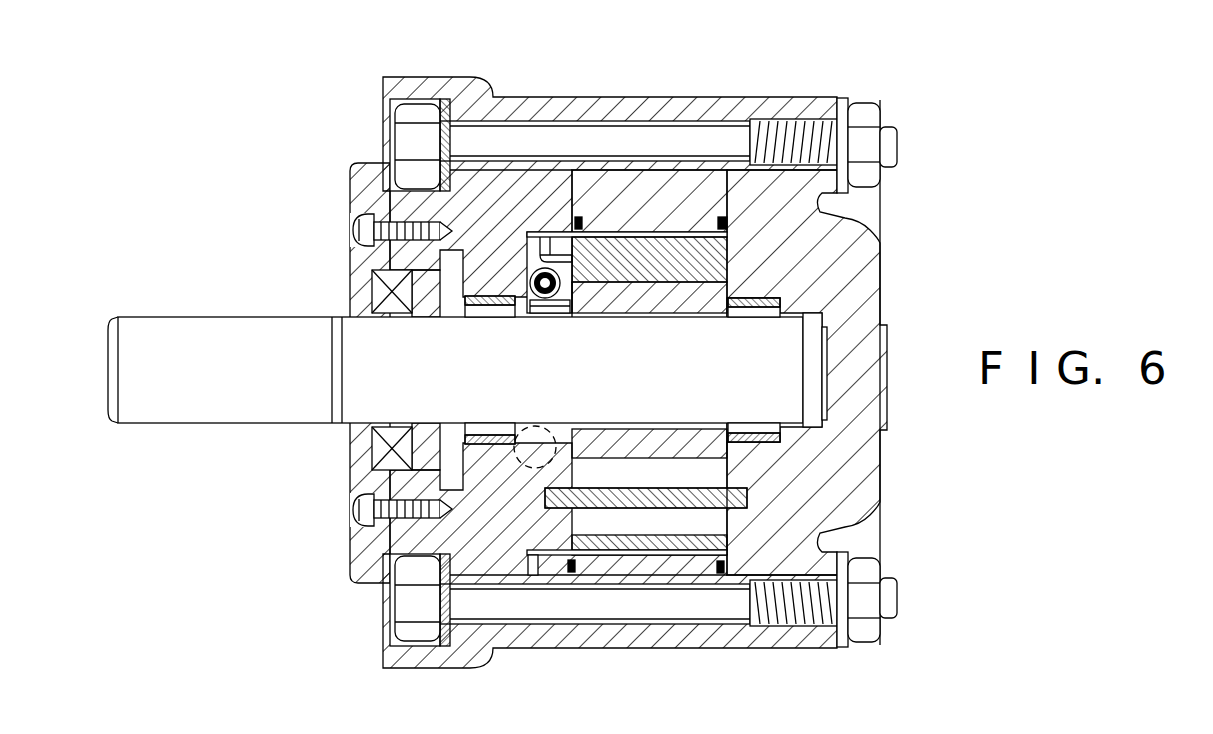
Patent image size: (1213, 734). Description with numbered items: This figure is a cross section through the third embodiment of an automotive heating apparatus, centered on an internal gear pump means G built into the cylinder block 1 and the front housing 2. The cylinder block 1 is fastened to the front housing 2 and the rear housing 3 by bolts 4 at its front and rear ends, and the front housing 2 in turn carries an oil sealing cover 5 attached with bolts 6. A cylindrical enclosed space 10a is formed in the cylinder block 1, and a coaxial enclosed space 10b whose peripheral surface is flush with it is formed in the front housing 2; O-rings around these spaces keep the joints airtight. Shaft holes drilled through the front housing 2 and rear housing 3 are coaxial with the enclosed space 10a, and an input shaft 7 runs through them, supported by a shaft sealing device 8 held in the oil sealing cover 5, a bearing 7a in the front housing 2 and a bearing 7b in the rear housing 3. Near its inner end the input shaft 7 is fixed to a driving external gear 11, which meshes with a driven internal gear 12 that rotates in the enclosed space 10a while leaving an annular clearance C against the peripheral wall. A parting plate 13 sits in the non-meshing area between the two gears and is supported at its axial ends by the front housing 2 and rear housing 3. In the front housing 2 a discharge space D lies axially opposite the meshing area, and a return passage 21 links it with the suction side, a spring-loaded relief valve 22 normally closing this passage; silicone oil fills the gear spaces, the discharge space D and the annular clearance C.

The cylinder block 1 is at (705, 98).
The front housing 2 is at (503, 98).
The rear housing 3 is at (783, 98).
The bolts 4 is at (735, 140).
The oil sealing cover 5 is at (364, 165).
The bolts 6 is at (353, 232).
The input shaft 7 is at (133, 365).
The bearing 7a is at (482, 312).
The bearing 7b is at (760, 310).
The shaft sealing device 8 is at (372, 291).
The enclosed space 10a is at (704, 548).
The enclosed space 10b is at (533, 560).
The driving external gear 11 is at (647, 300).
The driven internal gear 12 is at (708, 262).
The parting plate 13 is at (652, 495).
The return passage 21 is at (547, 255).
The relief valve 22 is at (540, 300).
The annular clearance C is at (600, 234).
The discharge space D is at (550, 433).
The internal gear pump means G is at (750, 460).